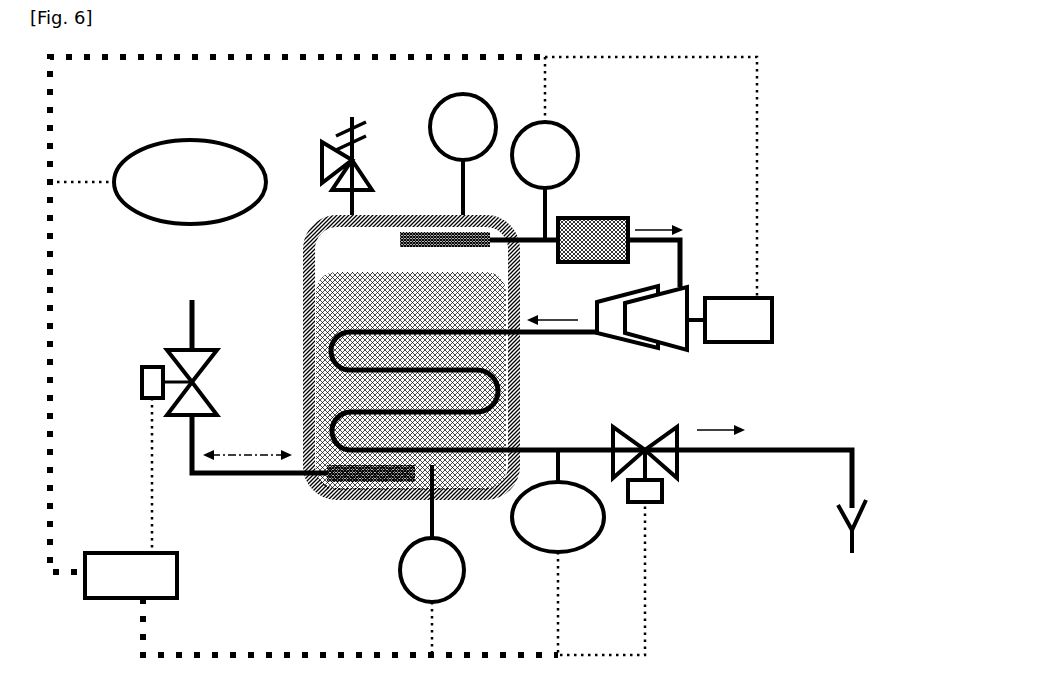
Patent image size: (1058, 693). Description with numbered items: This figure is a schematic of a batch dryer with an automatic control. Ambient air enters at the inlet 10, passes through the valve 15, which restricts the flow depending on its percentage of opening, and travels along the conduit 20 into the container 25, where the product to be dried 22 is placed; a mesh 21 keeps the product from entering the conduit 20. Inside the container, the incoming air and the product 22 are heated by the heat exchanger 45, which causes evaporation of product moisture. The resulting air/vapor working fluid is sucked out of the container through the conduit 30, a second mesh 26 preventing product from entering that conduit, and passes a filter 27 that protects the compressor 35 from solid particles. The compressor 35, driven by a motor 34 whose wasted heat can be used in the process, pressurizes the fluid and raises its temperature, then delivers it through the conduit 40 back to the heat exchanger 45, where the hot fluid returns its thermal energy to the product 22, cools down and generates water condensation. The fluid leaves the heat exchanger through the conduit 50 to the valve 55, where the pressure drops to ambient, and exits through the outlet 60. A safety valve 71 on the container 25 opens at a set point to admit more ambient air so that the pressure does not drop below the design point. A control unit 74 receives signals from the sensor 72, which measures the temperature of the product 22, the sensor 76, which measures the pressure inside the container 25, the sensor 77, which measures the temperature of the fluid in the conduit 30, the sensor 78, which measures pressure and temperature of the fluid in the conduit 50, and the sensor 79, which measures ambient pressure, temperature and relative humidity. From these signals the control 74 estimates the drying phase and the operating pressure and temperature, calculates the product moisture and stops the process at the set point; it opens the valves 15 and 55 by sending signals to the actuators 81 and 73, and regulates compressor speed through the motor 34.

The inlet 10 is at (192, 330).
The valve 15 is at (212, 372).
The conduit 20 is at (225, 475).
The mesh 21 is at (350, 484).
The product to be dried 22 is at (312, 398).
The container 25 is at (308, 300).
The mesh 26 is at (490, 247).
The filter 27 is at (603, 218).
The conduit 30 is at (681, 250).
The motor 34 is at (772, 342).
The compressor 35 is at (660, 350).
The conduit 40 is at (535, 334).
The heat exchanger 45 is at (520, 398).
The conduit 50 is at (590, 450).
The valve 55 is at (677, 468).
The outlet 60 is at (852, 482).
The safety valve 71 is at (322, 150).
The temperature sensor 72 is at (466, 570).
The actuator 73 is at (662, 498).
The control unit 74 is at (177, 563).
The pressure sensor 76 is at (433, 112).
The temperature sensor 77 is at (575, 135).
The pressure and temperature sensor 78 is at (576, 550).
The ambient conditions sensor 79 is at (150, 140).
The actuator 81 is at (142, 382).